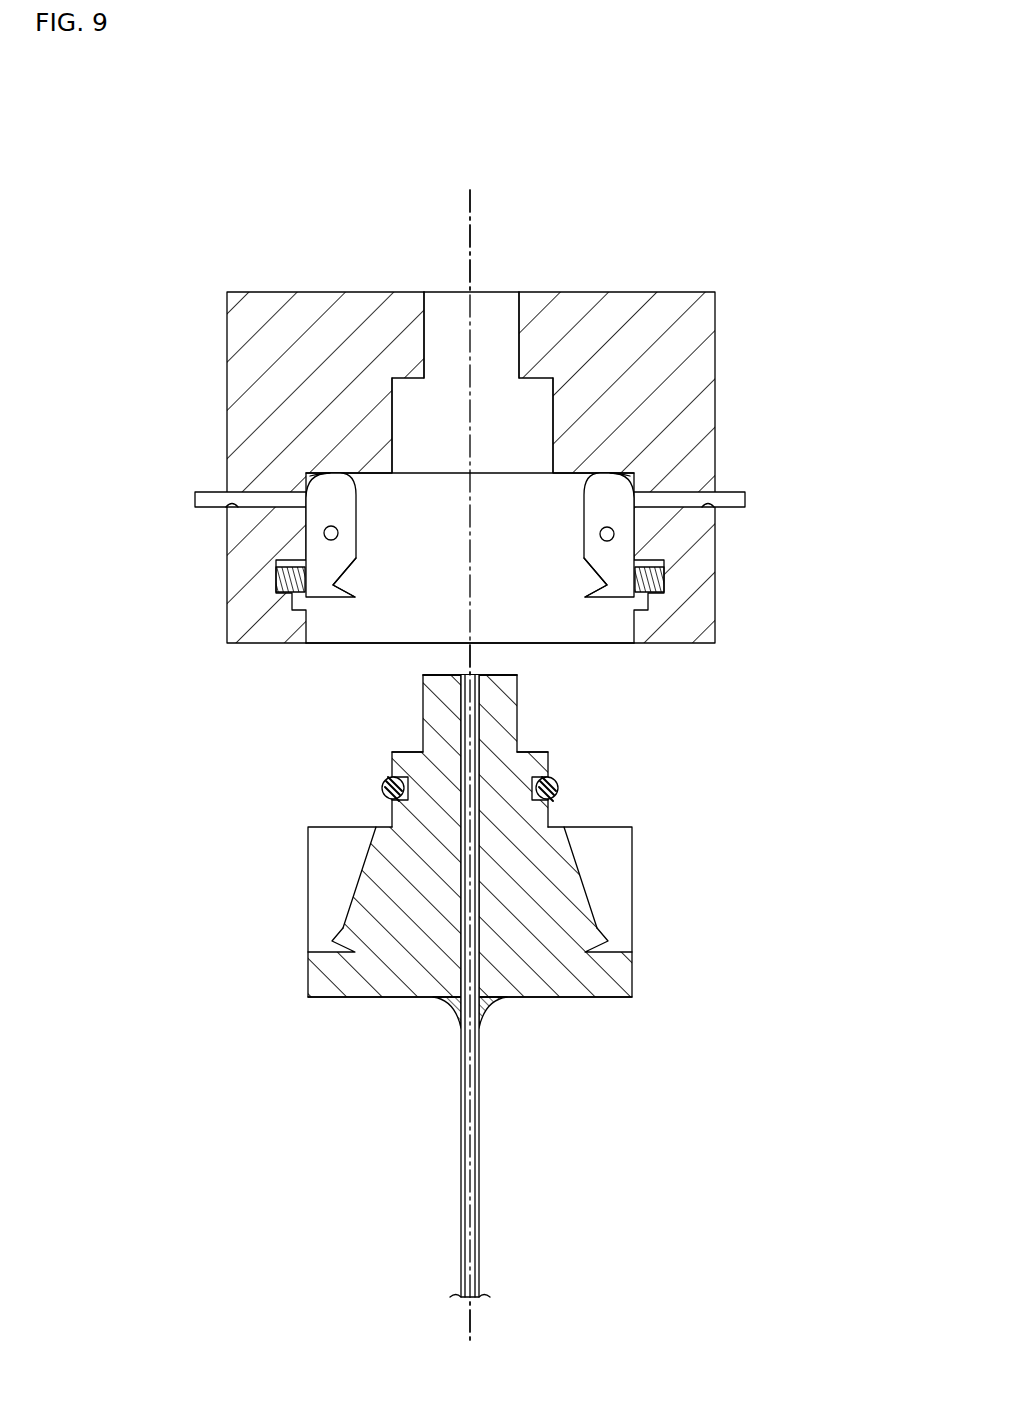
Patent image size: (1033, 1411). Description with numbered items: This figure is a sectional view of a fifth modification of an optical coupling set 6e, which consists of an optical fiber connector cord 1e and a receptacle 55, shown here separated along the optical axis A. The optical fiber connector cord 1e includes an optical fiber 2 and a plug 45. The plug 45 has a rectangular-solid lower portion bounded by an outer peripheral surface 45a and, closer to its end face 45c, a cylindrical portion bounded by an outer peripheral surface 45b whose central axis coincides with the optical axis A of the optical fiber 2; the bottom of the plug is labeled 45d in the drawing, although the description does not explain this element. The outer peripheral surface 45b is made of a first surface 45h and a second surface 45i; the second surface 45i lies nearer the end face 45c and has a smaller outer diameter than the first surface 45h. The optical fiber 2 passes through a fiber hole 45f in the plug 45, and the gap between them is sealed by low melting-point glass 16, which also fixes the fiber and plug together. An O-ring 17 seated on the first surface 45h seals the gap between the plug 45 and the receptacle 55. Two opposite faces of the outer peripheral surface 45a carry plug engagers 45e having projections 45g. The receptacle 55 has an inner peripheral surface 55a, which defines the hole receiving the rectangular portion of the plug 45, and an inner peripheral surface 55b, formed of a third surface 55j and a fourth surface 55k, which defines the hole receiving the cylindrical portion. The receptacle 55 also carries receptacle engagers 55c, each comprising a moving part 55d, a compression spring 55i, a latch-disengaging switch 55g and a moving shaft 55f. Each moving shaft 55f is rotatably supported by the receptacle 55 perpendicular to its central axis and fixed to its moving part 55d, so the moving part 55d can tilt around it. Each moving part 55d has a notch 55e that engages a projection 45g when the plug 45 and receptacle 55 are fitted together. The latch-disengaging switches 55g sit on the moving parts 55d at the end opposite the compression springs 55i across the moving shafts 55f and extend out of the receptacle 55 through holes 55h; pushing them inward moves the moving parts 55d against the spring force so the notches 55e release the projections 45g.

The optical fiber connector cord 1e is at (711, 1108).
The optical fiber 2 is at (478, 1160).
The optical coupling set 6e is at (715, 212).
The low melting-point glass 16 is at (488, 1008).
The O-ring 17 is at (385, 790).
The plug 45 is at (464, 876).
The outer peripheral surface 45a is at (632, 863).
The outer peripheral surface 45b is at (662, 703).
The end face 45c is at (426, 674).
The bottom end face 45d is at (353, 998).
The plug engager 45e is at (362, 876).
The fiber hole 45f is at (445, 735).
The projection 45g is at (335, 931).
The first surface 45h is at (550, 757).
The second surface 45i is at (518, 712).
The receptacle 55 is at (460, 496).
The inner peripheral surface 55a is at (630, 643).
The inner peripheral surface 55b is at (462, 390).
The receptacle engager 55c is at (325, 612).
The moving part 55d is at (335, 497).
The notch 55e is at (350, 585).
The moving shaft 55f is at (338, 533).
The latch-disengaging switch 55g is at (195, 497).
The hole 55h is at (232, 508).
The compression spring 55i is at (287, 593).
The third surface 55j is at (553, 445).
The fourth surface 55k is at (513, 350).
The optical axis A is at (470, 224).